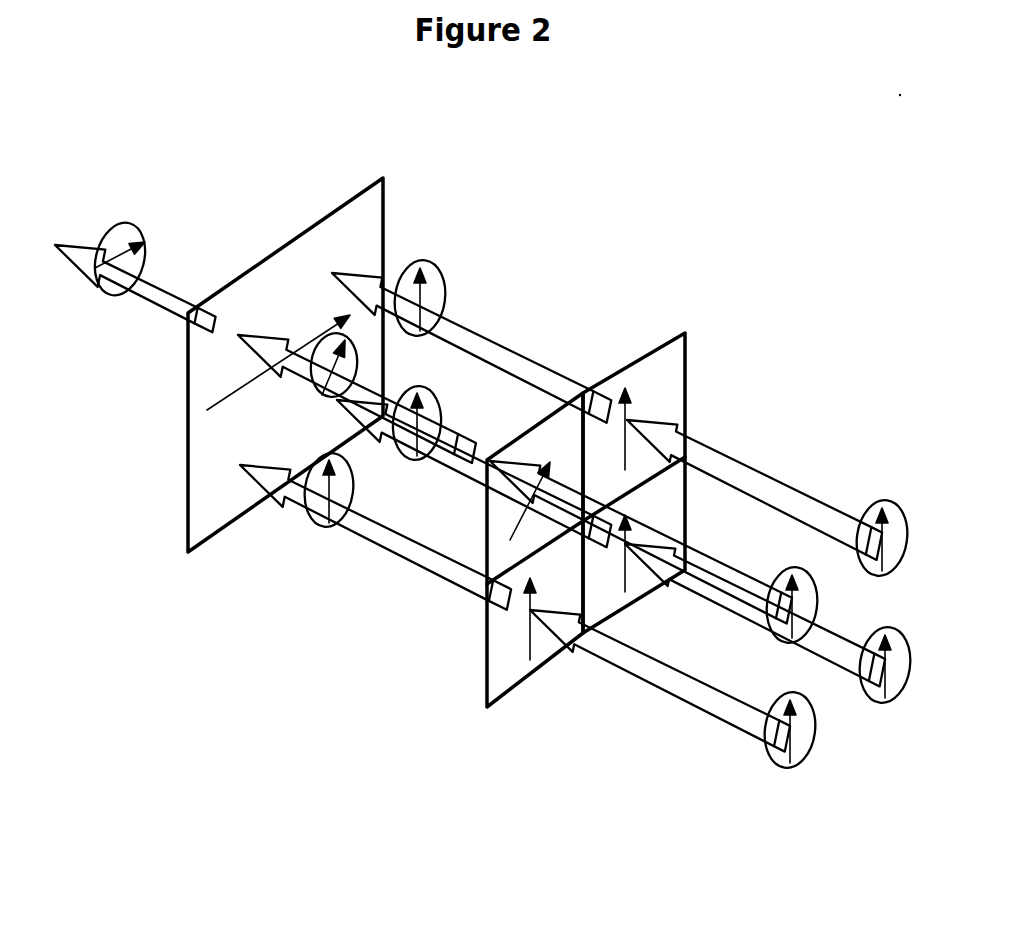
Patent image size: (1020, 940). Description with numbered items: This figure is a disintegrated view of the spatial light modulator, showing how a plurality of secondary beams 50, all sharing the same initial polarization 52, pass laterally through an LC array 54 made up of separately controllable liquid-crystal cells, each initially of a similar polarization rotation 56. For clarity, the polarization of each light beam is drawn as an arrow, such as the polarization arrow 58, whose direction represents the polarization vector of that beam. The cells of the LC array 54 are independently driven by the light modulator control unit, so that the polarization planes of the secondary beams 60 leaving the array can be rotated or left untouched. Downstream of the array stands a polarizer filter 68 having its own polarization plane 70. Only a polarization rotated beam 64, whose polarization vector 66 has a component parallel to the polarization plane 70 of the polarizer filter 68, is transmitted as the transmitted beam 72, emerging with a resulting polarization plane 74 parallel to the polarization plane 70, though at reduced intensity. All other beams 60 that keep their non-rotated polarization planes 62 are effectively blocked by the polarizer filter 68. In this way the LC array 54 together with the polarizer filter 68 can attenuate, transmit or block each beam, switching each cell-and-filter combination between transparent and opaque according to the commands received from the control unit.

The secondary beams 50 is at (667, 685).
The initial polarization 52 is at (777, 770).
The LC array 54 is at (690, 343).
The polarization rotation 56 is at (650, 400).
The polarization arrow 58 is at (498, 545).
The secondary beams 60 is at (538, 366).
The non-rotated polarization planes 62 is at (447, 270).
The polarization rotated beam 64 is at (382, 418).
The polarization vector 66 is at (305, 375).
The polarizer filter 68 is at (185, 372).
The polarization plane 70 is at (228, 400).
The transmitted beam 72 is at (168, 290).
The resulting polarization plane 74 is at (112, 224).